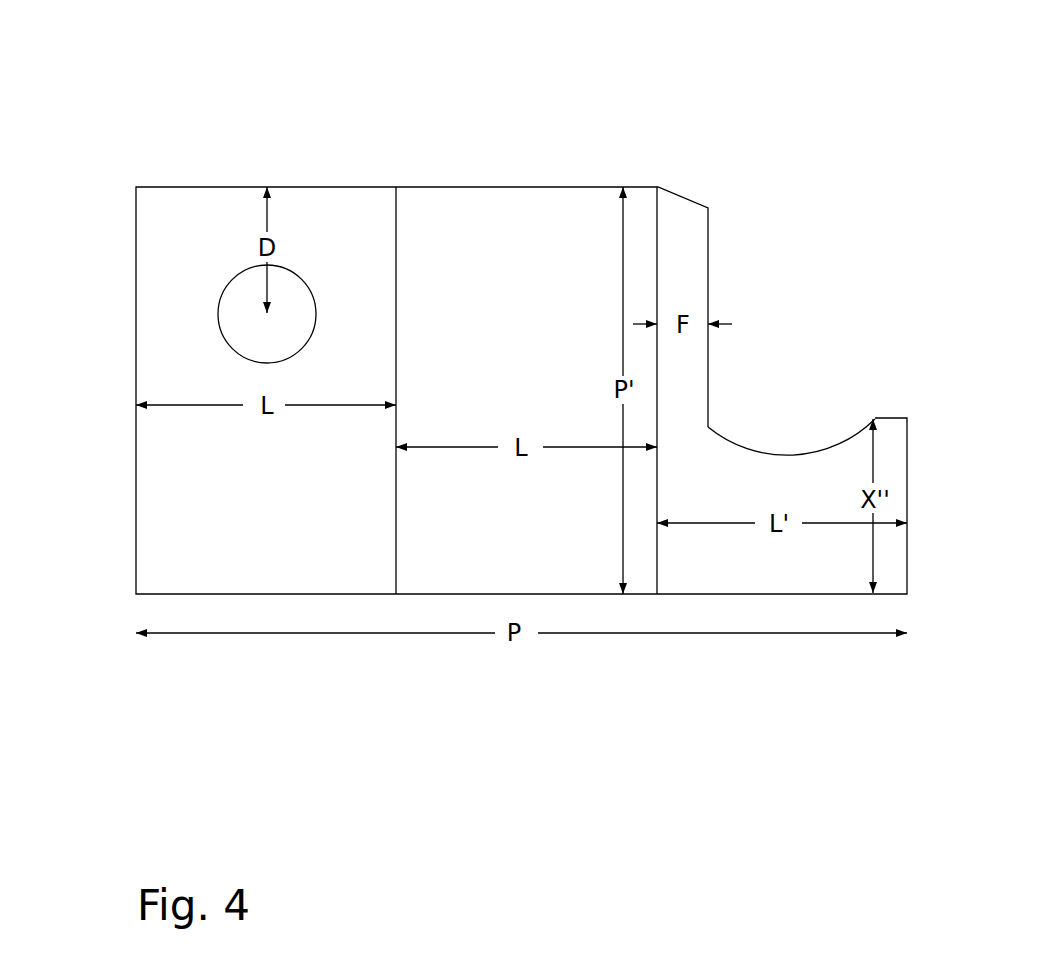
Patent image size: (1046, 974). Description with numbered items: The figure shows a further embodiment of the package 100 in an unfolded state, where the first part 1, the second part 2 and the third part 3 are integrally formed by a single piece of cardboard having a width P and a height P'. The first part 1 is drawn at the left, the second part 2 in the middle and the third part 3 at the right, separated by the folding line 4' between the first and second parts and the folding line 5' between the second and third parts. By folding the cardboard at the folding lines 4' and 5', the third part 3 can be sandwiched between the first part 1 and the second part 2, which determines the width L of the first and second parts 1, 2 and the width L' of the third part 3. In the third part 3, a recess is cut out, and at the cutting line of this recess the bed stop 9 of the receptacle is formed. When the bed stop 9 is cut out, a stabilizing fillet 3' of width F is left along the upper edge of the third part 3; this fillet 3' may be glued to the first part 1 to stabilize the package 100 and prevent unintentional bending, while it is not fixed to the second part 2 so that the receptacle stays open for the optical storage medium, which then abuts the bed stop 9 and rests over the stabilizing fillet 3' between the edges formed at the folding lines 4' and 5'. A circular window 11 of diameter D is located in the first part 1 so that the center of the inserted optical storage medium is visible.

The package 100 is at (483, 318).
The first part 1 is at (239, 347).
The window 11 is at (195, 255).
The folding line 4' is at (335, 371).
The second part 2 is at (509, 346).
The folding line 5' is at (596, 371).
The third part 3 is at (740, 568).
The stabilizing fillet 3' is at (729, 289).
The bed stop 9 is at (822, 404).